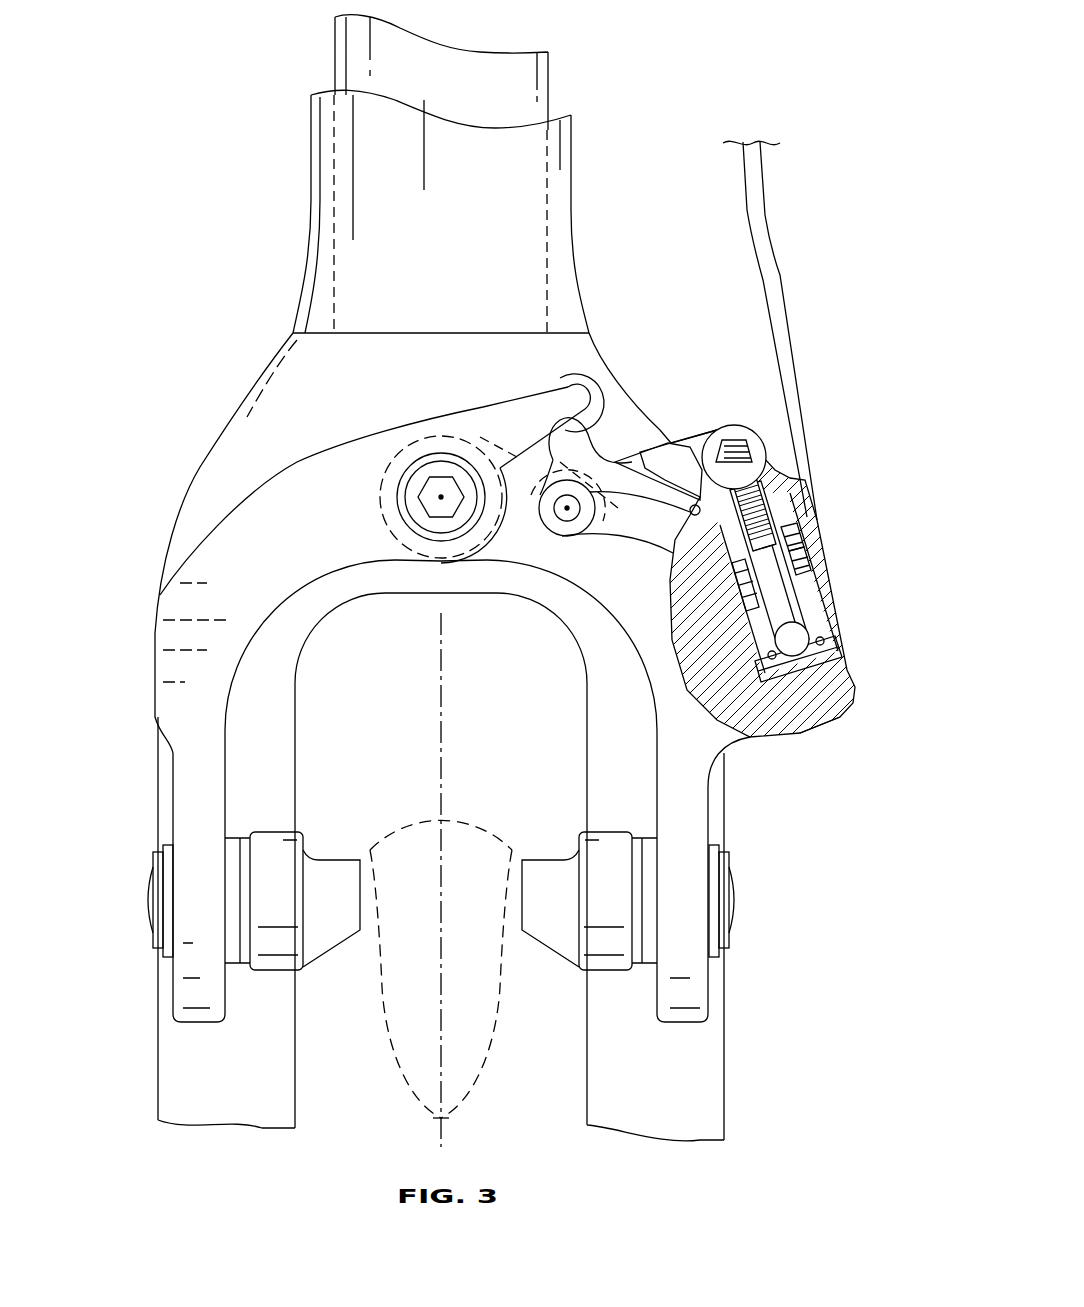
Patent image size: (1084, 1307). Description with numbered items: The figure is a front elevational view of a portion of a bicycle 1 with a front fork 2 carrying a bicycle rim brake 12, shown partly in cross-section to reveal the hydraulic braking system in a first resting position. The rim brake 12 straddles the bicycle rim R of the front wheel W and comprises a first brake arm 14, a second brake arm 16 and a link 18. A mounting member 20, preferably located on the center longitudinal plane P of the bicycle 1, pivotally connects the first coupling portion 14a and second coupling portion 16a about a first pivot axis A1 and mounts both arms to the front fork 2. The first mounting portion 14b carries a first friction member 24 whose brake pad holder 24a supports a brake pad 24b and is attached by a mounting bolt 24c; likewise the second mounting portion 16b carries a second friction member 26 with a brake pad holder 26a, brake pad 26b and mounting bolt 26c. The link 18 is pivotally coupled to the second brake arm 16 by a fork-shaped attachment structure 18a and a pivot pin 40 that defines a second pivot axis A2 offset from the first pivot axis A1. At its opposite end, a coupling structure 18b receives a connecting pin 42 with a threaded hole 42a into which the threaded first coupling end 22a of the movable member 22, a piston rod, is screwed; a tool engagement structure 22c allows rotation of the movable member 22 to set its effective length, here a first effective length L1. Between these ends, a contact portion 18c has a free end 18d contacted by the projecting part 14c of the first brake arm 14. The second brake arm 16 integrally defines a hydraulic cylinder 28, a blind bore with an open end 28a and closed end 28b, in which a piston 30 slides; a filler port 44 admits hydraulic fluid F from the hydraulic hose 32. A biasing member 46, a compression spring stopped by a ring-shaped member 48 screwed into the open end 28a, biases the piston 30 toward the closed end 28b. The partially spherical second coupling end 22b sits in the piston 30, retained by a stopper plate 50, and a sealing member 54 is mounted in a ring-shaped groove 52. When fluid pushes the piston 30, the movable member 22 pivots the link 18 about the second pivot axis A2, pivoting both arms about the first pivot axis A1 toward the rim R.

The bicycle 1 is at (298, 172).
The front fork 2 is at (264, 364).
The bicycle rim brake 12 is at (208, 490).
The first brake arm 14 is at (151, 660).
The first coupling portion 14a is at (462, 566).
The first mounting portion 14b is at (170, 990).
The projecting part 14c is at (582, 382).
The second brake arm 16 is at (714, 790).
The second coupling portion 16a is at (382, 520).
The second mounting portion 16b is at (712, 988).
The link 18 is at (631, 455).
The attachment structure 18a is at (541, 548).
The coupling structure 18b is at (768, 456).
The contact portion 18c is at (615, 418).
The free end 18d is at (560, 437).
The mounting member 20 is at (440, 452).
The movable member 22 is at (780, 514).
The first coupling end 22a is at (744, 432).
The second coupling end 22b is at (811, 609).
The tool engagement structure 22c is at (720, 430).
The first friction member 24 is at (266, 820).
The brake pad holder 24a is at (272, 972).
The brake pad 24b is at (330, 950).
The mounting bolt 24c is at (148, 890).
The second friction member 26 is at (617, 820).
The brake pad holder 26a is at (610, 972).
The brake pad 26b is at (552, 950).
The mounting bolt 26c is at (740, 900).
The hydraulic cylinder 28 is at (845, 588).
The open end 28a is at (826, 556).
The closed end 28b is at (840, 680).
The piston 30 is at (811, 643).
The hydraulic hose 32 is at (768, 213).
The pivot pin 40 is at (539, 514).
The connecting pin 42 is at (757, 445).
The threaded hole 42a is at (785, 497).
The filler port 44 is at (800, 695).
The biasing member 46 is at (812, 578).
The ring-shaped member 48 is at (806, 538).
The stopper plate 50 is at (760, 662).
The ring-shaped groove 52 is at (818, 650).
The sealing member 54 is at (845, 654).
The first pivot axis A1 is at (439, 496).
The second pivot axis A2 is at (568, 511).
The hydraulic fluid F is at (776, 700).
The first effective length L1 is at (705, 570).
The center longitudinal plane P is at (438, 650).
The bicycle rim R is at (492, 1058).
The front wheel W is at (507, 690).